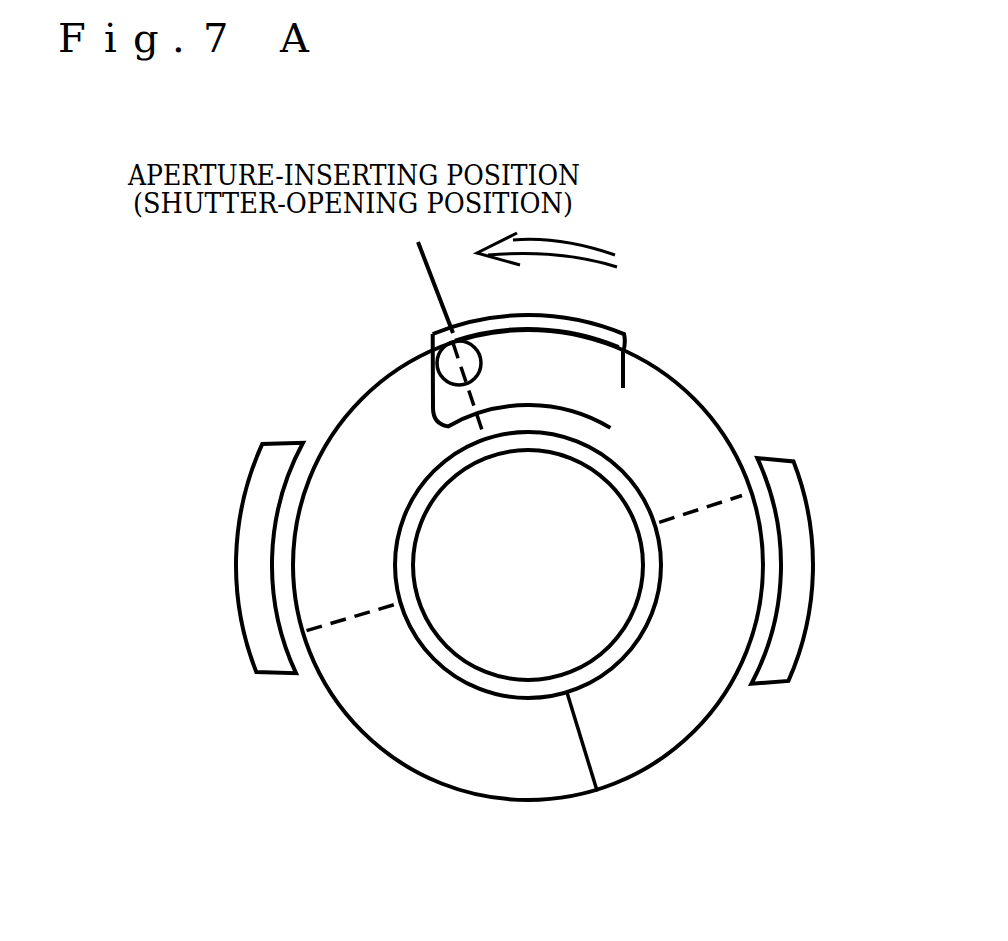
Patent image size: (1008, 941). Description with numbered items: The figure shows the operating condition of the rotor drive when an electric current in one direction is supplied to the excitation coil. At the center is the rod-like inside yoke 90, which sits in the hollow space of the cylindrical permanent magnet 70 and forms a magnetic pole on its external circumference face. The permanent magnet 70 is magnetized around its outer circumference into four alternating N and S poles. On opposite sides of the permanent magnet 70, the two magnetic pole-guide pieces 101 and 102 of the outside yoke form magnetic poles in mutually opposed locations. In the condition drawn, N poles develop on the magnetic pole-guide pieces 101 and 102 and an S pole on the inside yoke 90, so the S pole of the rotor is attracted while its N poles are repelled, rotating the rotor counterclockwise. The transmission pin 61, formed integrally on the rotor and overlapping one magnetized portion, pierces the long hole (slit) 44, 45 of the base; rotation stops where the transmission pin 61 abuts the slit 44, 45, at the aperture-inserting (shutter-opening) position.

The long hole (slit) 44 is at (578, 352).
The long hole (slit) 45 is at (578, 371).
The transmission pin 61 is at (449, 312).
The permanent magnet 70 is at (528, 603).
The inside yoke 90 is at (585, 533).
The magnetic pole-guide piece 101 is at (816, 604).
The magnetic pole-guide piece 102 is at (235, 594).